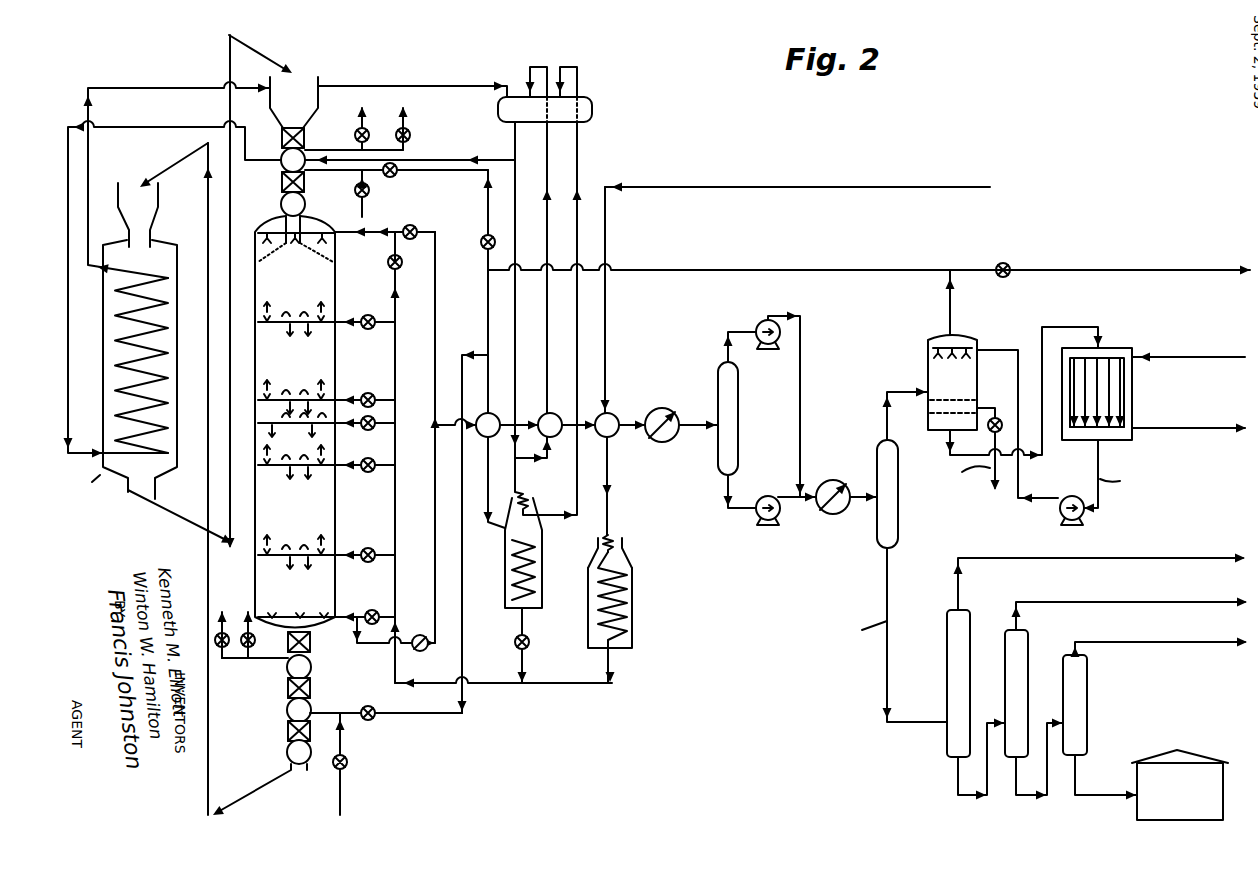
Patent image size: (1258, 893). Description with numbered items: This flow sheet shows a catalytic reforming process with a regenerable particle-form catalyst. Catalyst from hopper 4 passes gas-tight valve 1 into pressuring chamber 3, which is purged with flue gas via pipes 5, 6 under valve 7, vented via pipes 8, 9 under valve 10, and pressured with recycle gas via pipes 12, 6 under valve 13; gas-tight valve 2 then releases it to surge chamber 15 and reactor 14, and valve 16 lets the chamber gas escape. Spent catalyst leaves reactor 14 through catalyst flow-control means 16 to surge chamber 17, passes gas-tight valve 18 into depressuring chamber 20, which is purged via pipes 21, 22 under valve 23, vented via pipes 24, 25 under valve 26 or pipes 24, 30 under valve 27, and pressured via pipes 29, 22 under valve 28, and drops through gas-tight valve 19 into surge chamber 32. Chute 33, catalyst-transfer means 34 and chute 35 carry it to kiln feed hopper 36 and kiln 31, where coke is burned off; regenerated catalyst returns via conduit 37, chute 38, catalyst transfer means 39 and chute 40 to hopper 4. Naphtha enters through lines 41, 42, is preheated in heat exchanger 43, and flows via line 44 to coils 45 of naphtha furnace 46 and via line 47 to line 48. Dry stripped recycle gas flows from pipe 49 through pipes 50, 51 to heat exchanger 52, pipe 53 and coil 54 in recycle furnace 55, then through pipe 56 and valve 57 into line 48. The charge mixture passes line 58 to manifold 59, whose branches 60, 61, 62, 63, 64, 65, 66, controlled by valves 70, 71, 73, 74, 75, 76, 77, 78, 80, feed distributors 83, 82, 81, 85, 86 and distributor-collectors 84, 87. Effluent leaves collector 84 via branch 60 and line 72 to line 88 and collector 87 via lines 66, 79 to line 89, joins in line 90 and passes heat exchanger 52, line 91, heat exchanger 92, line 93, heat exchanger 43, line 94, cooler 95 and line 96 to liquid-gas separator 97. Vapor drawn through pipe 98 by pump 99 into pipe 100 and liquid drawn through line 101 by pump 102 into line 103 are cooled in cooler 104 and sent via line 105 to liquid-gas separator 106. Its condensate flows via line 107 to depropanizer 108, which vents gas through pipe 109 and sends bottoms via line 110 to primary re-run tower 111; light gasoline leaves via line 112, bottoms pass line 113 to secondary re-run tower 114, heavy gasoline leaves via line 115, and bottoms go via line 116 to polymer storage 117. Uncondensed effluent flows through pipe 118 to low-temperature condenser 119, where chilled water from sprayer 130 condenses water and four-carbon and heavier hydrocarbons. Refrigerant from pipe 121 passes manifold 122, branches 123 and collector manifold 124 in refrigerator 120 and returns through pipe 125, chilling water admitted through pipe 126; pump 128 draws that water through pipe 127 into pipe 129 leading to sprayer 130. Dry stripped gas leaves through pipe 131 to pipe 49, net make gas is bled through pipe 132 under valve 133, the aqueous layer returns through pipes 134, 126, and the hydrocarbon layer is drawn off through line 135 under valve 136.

The gas-tight valve 1 is at (281, 137).
The gas-tight valve 2 is at (281, 183).
The pressuring chamber 3 is at (293, 160).
The hopper 4 is at (294, 102).
The pipe 5 is at (370, 192).
The pipe 6 is at (333, 172).
The valve 7 is at (367, 172).
The pipe 8 is at (320, 152).
The pipe 9 is at (409, 123).
The valve 10 is at (411, 136).
The pipe 12 is at (456, 174).
The valve 13 is at (398, 176).
The reactor 14 is at (303, 285).
The surge chamber 15 is at (295, 227).
The valve 16 is at (355, 135).
The surge chamber 17 is at (366, 120).
The gas-tight valve 18 is at (311, 690).
The gas-tight valve 19 is at (288, 729).
The depressuring chamber 20 is at (299, 710).
The pipe 21 is at (344, 800).
The pipe 22 is at (321, 712).
The valve 23 is at (350, 766).
The pipe 24 is at (233, 662).
The pipe 25 is at (220, 657).
The valve 26 is at (216, 638).
The valve 27 is at (257, 645).
The valve 28 is at (380, 710).
The pipe 29 is at (438, 716).
The pipe 30 is at (251, 664).
The kiln 31 is at (102, 322).
The surge chamber 32 is at (299, 752).
The chute 33 is at (266, 790).
The catalyst-transfer means 34 is at (205, 209).
The chute 35 is at (170, 164).
The kiln feed hopper 36 is at (138, 215).
The conduit 37 is at (144, 490).
The chute 38 is at (171, 528).
The catalyst transfer means 39 is at (236, 548).
The chute 40 is at (268, 58).
The line 41 is at (929, 190).
The line 42 is at (610, 326).
The heat exchanger 43 is at (607, 425).
The line 44 is at (611, 470).
The coils 45 is at (626, 590).
The naphtha furnace 46 is at (630, 628).
The line 47 is at (612, 659).
The line 48 is at (582, 686).
The pipe 49 is at (858, 273).
The pipe 50 is at (486, 327).
The pipe 51 is at (484, 388).
The heat exchanger 52 is at (488, 425).
The pipe 53 is at (487, 481).
The coil 54 is at (530, 572).
The recycle furnace 55 is at (504, 597).
The pipe 56 is at (520, 619).
The valve 57 is at (515, 646).
The line 58 is at (400, 669).
The manifold 59 is at (393, 505).
The branch 60 is at (380, 238).
The branch 61 is at (348, 318).
The branch 62 is at (349, 396).
The branch 63 is at (347, 429).
The branch 64 is at (348, 469).
The branch 65 is at (349, 551).
The branch 66 is at (370, 613).
The valve 70 is at (402, 265).
The valve 71 is at (414, 228).
The line 72 is at (431, 235).
The valve 73 is at (365, 330).
The valve 74 is at (373, 393).
The valve 75 is at (376, 426).
The valve 76 is at (376, 467).
The valve 77 is at (378, 553).
The valve 78 is at (380, 612).
The line 79 is at (363, 646).
The valve 80 is at (421, 635).
The distributor 81 is at (296, 430).
The distributor 82 is at (296, 383).
The distributor 83 is at (296, 327).
The distributor-collector 84 is at (313, 240).
The distributor 85 is at (296, 470).
The distributor 86 is at (296, 559).
The distributor-collector 87 is at (292, 614).
The line 88 is at (433, 295).
The line 89 is at (433, 522).
The line 90 is at (452, 432).
The line 91 is at (504, 414).
The heat exchanger 92 is at (550, 425).
The line 93 is at (566, 413).
The line 94 is at (626, 420).
The cooler 95 is at (649, 438).
The line 96 is at (699, 424).
The liquid-gas separator 97 is at (739, 438).
The pipe 98 is at (744, 328).
The pump 99 is at (773, 348).
The pipe 100 is at (802, 382).
The line 101 is at (726, 493).
The pump 102 is at (762, 518).
The line 103 is at (798, 505).
The cooler 104 is at (830, 480).
The line 105 is at (856, 506).
The liquid-gas separator 106 is at (897, 519).
The line 107 is at (887, 681).
The depropanizer 108 is at (947, 649).
The pipe 109 is at (955, 582).
The line 110 is at (994, 789).
The primary re-run tower 111 is at (1028, 654).
The line 112 is at (1043, 605).
The line 113 is at (1056, 789).
The secondary re-run tower 114 is at (1087, 699).
The line 115 is at (1154, 649).
The line 116 is at (1107, 792).
The polymer storage 117 is at (1192, 751).
The pipe 118 is at (905, 384).
The condenser 119 is at (952, 382).
The refrigerator 120 is at (1112, 345).
The pipe 121 is at (1162, 359).
The manifold 122 is at (1078, 358).
The branches 123 is at (1110, 393).
The collector manifold 124 is at (1080, 433).
The pipe 125 is at (1178, 431).
The pipe 126 is at (1040, 335).
The pipe 127 is at (1100, 498).
The pump 128 is at (1085, 513).
The pipe 129 is at (1000, 347).
The sprayer 130 is at (960, 345).
The pipe 131 is at (947, 303).
The pipe 132 is at (1158, 272).
The valve 133 is at (1000, 262).
The pipe 134 is at (947, 448).
The line 135 is at (988, 406).
The valve 136 is at (990, 432).